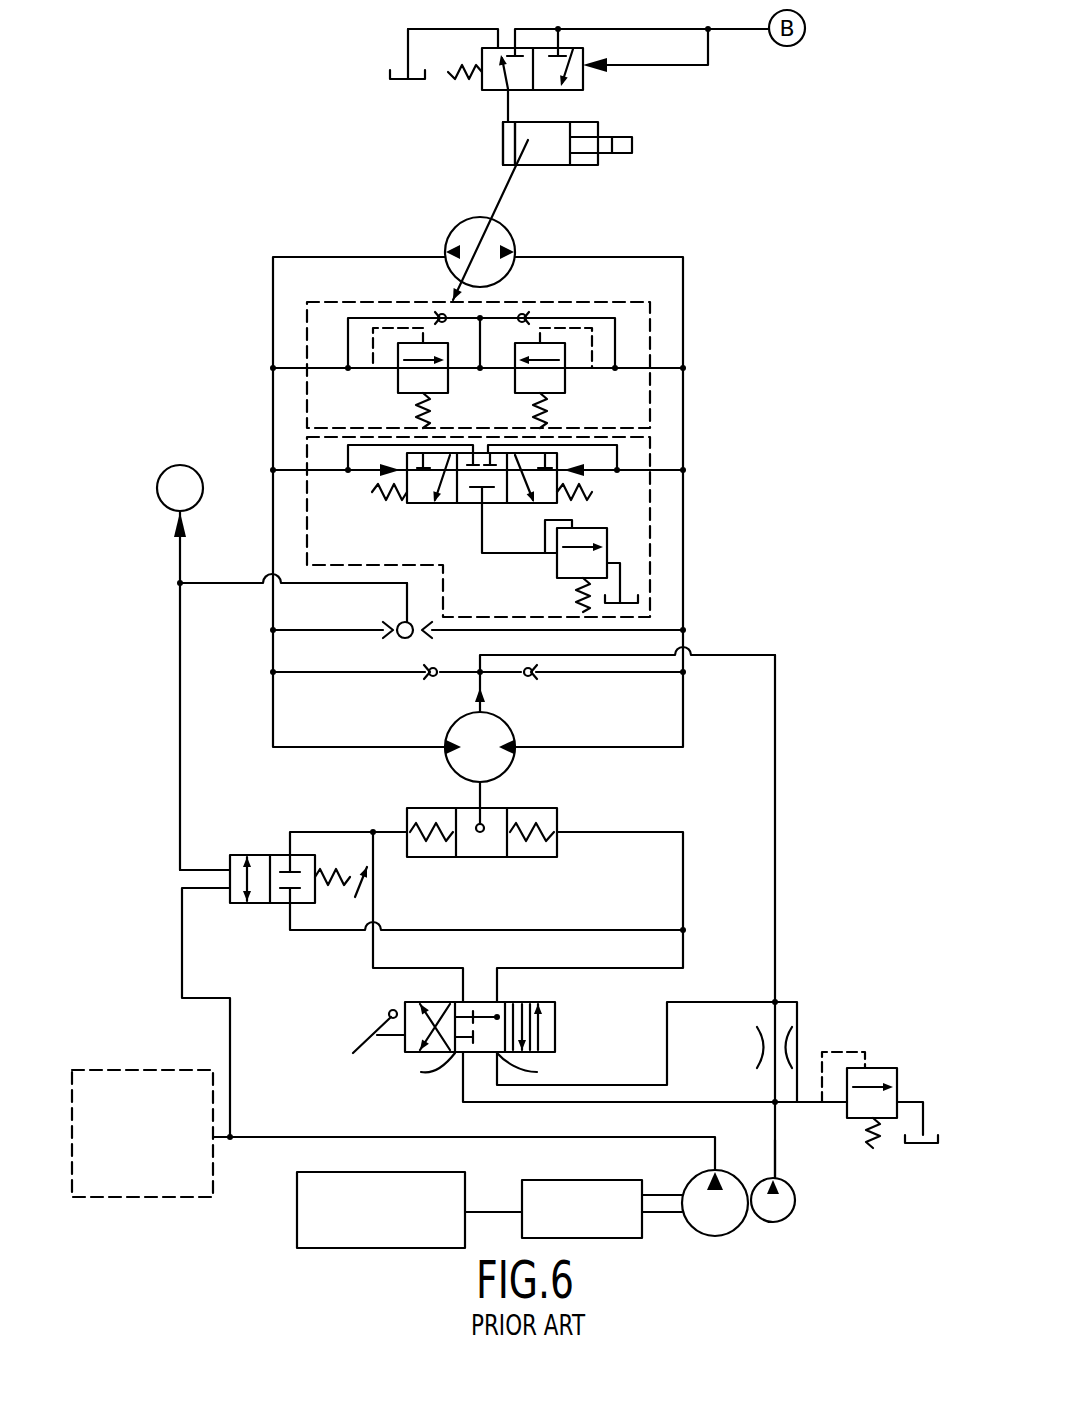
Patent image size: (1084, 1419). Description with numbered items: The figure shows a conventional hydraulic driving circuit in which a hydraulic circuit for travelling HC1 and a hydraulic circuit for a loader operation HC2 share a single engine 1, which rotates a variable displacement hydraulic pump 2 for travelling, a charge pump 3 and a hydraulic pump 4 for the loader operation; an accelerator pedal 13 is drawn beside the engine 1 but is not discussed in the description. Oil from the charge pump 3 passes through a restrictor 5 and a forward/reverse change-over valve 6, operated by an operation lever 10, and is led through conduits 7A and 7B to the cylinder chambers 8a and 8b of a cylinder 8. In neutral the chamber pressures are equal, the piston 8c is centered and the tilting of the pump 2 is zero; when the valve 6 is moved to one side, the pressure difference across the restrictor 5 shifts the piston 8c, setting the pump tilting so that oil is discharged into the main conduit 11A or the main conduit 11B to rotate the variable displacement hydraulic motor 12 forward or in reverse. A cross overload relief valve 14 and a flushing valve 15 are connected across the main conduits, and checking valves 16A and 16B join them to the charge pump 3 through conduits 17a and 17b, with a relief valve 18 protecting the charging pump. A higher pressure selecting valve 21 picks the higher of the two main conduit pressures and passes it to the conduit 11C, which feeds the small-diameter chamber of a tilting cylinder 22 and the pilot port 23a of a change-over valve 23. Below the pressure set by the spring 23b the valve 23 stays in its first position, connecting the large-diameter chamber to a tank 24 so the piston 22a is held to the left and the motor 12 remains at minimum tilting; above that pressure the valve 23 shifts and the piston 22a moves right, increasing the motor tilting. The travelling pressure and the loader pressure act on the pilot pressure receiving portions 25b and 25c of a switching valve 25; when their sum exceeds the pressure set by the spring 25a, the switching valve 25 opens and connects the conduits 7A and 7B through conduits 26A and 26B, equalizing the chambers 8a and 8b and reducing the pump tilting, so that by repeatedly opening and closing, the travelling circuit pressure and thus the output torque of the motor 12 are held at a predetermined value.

The engine 1 is at (523, 1179).
The variable displacement hydraulic pump 2 is at (458, 726).
The charge pump 3 is at (797, 1200).
The hydraulic pump for a loader operation 4 is at (733, 1171).
The restrictor 5 is at (757, 1046).
The forward/reverse change-over valve 6 is at (557, 1028).
The conduit 7A is at (374, 900).
The conduit 7B is at (685, 858).
The cylinder 8 is at (520, 832).
The cylinder chamber 8a is at (432, 815).
The cylinder chamber 8b is at (532, 815).
The piston 8c is at (492, 848).
The operation lever 10 is at (378, 1033).
The main conduit 11A is at (273, 417).
The main conduit 11B is at (685, 288).
The conduit 11C is at (178, 550).
The variable displacement hydraulic motor 12 is at (447, 236).
The accelerator pedal 13 is at (296, 1212).
The cross overload relief valve 14 is at (650, 345).
The flushing valve 15 is at (650, 440).
The checking valve 16A is at (428, 677).
The checking valve 16B is at (536, 679).
The conduit 17a is at (776, 760).
The conduit 17b is at (776, 1141).
The relief valve for the charging pump 18 is at (888, 1068).
The higher pressure selecting valve 21 is at (413, 618).
The tilting cylinder 22 is at (620, 136).
The piston 22a is at (558, 163).
The change-over valve 23 is at (482, 55).
The pilot port 23a is at (590, 58).
The spring 23b is at (449, 73).
The tank 24 is at (390, 78).
The switching valve 25 is at (233, 905).
The spring 25a is at (347, 873).
The pilot pressure receiving portion 25b is at (199, 870).
The pilot pressure receiving portion 25c is at (207, 891).
The conduit 26A is at (290, 850).
The conduit 26B is at (300, 931).
The hydraulic circuit for travelling HC1 is at (752, 564).
The hydraulic circuit for a loader operation HC2 is at (138, 1064).